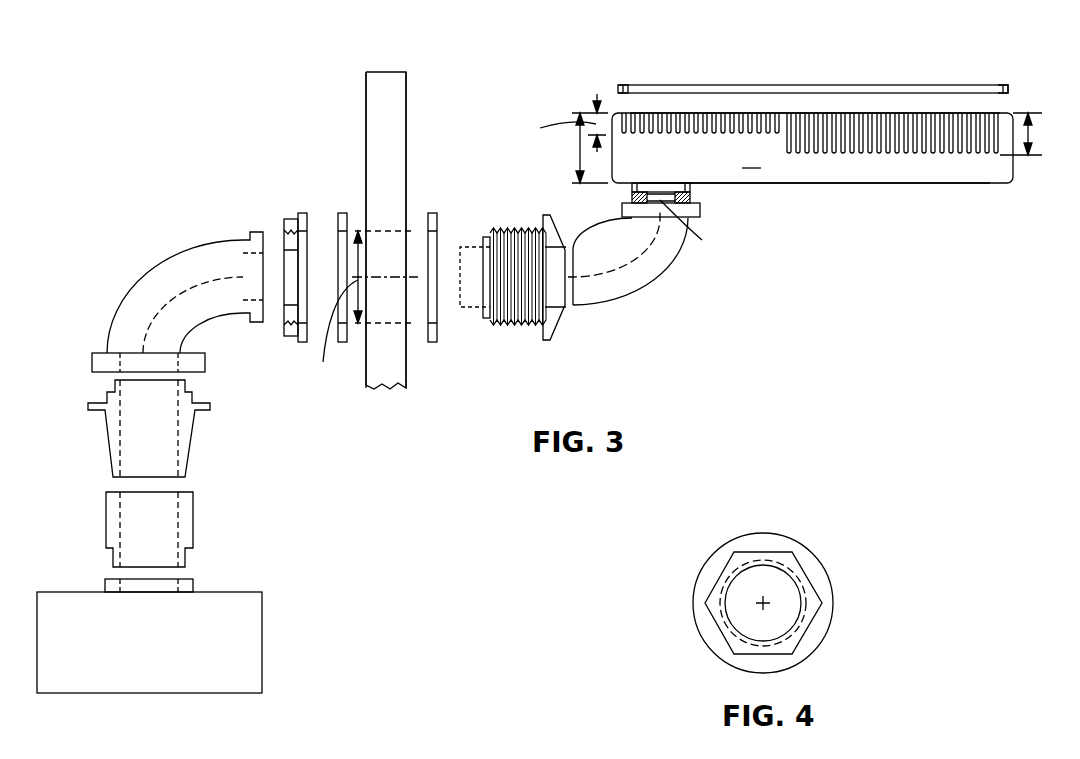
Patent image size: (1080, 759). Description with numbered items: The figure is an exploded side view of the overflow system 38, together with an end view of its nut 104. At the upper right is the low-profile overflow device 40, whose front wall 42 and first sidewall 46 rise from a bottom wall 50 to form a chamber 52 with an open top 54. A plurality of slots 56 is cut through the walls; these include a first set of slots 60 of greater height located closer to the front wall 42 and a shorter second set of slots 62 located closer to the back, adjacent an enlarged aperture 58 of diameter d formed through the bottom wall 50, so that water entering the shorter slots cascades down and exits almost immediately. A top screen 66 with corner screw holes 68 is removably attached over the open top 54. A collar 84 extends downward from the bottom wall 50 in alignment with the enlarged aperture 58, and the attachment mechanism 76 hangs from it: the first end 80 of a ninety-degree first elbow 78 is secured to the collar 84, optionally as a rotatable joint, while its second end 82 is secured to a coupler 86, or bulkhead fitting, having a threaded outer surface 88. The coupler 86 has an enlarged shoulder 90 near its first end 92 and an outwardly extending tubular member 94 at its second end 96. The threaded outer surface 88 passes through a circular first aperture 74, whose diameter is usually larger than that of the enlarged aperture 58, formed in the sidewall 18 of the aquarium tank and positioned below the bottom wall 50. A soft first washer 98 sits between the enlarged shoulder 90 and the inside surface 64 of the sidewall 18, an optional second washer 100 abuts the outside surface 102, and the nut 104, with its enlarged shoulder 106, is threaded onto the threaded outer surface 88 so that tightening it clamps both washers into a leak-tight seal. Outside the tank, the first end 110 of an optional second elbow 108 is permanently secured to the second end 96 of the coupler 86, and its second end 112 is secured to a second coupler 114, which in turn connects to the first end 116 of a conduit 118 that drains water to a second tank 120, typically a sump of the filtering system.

In FIG. 3, the sidewall 18 is at (379, 230).
In FIG. 3, the overflow system 38 is at (203, 108).
In FIG. 3, the overflow device 40 is at (781, 136).
In FIG. 3, the front wall 42 is at (1012, 178).
In FIG. 3, the first sidewall 46 is at (752, 159).
In FIG. 3, the bottom wall 50 is at (815, 184).
In FIG. 3, the chamber 52 is at (606, 103).
In FIG. 3, the open top 54 is at (1012, 113).
In FIG. 3, the plurality of slots 56 is at (793, 102).
In FIG. 3, the enlarged aperture 58 is at (690, 198).
In FIG. 3, the first set of slots 60 is at (890, 118).
In FIG. 3, the second set of slots 62 is at (712, 115).
In FIG. 3, the inside surface 64 is at (406, 164).
In FIG. 3, the top screen 66 is at (915, 85).
In FIG. 3, the screw holes 68 is at (622, 85).
In FIG. 3, the first aperture 74 is at (408, 238).
In FIG. 3, the attachment mechanism 76 is at (638, 260).
In FIG. 3, the first elbow 78 is at (633, 283).
In FIG. 3, the first end 80 is at (622, 205).
In FIG. 3, the second end 82 is at (583, 310).
In FIG. 3, the collar 84 is at (632, 187).
In FIG. 3, the coupler 86 is at (511, 275).
In FIG. 3, the threaded outer surface 88 is at (510, 235).
In FIG. 3, the enlarged shoulder 90 is at (550, 325).
In FIG. 3, the first end 92 is at (560, 305).
In FIG. 3, the outwardly extending tubular member 94 is at (485, 308).
In FIG. 3, the second end 96 is at (460, 305).
In FIG. 3, the first washer 98 is at (437, 213).
In FIG. 3, the second washer 100 is at (343, 212).
In FIG. 3, the outside surface 102 is at (366, 124).
In FIG. 3, the nut 104 is at (287, 210).
In FIG. 4, the nut 104 is at (816, 528).
In FIG. 3, the enlarged shoulder 106 is at (303, 213).
In FIG. 4, the enlarged shoulder 106 is at (815, 572).
In FIG. 3, the second elbow 108 is at (152, 302).
In FIG. 3, the first end 110 is at (258, 232).
In FIG. 3, the second end 112 is at (100, 373).
In FIG. 3, the second coupler 114 is at (220, 392).
In FIG. 3, the first end 116 is at (191, 516).
In FIG. 3, the conduit 118 is at (206, 528).
In FIG. 3, the second tank 120 is at (255, 592).